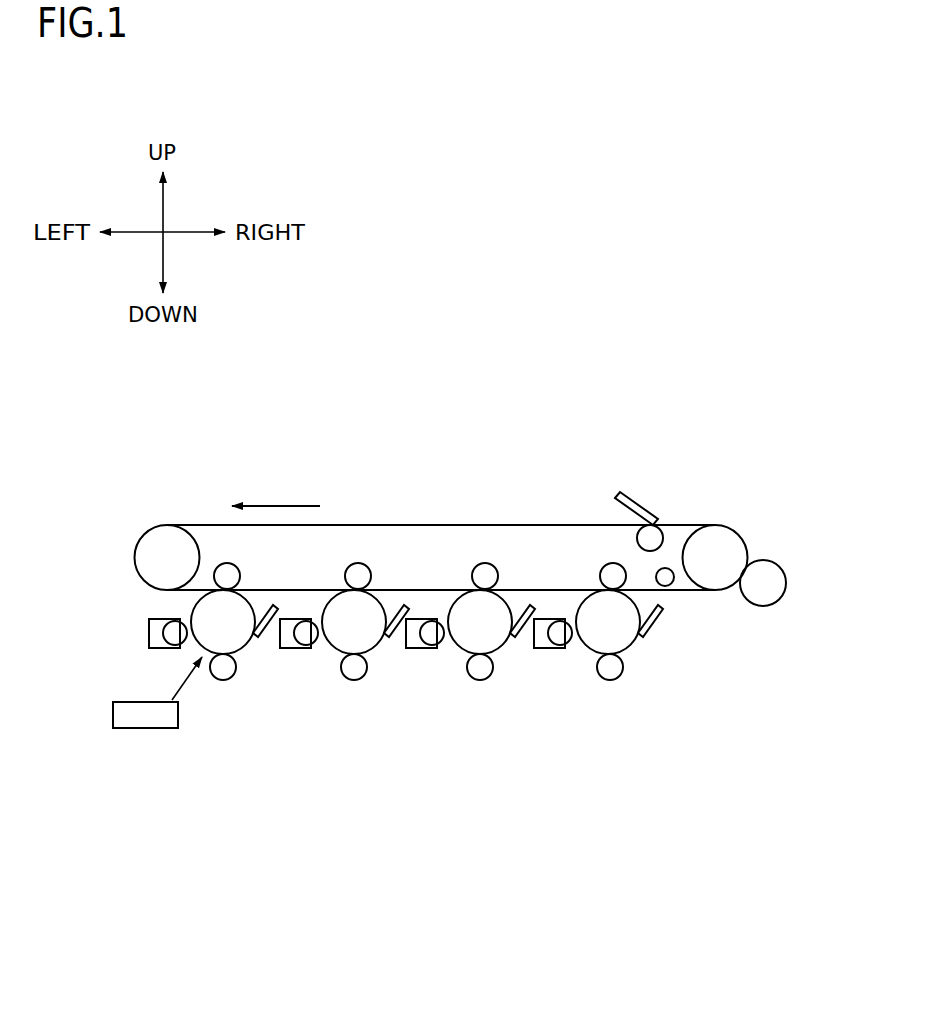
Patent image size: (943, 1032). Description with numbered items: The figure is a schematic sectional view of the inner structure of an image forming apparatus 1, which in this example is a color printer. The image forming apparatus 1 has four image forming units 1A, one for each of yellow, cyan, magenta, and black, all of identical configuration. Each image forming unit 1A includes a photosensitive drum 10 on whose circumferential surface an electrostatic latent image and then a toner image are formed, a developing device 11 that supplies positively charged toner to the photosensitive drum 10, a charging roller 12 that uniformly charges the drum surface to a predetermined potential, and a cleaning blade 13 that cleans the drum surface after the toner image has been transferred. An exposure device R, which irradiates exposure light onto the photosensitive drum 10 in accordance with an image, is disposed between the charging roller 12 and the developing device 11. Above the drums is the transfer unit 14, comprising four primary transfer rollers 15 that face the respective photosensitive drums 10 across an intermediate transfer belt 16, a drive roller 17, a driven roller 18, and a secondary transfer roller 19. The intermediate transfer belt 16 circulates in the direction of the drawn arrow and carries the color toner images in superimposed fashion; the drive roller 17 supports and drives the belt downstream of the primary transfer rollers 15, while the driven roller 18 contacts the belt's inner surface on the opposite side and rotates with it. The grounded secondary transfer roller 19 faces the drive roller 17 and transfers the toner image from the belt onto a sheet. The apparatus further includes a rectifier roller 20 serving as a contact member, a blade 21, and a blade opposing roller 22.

The image forming apparatus 1 is at (725, 458).
The image forming unit 1A is at (223, 713).
The photosensitive drum 10 is at (205, 610).
The developing device 11 is at (149, 628).
The charging roller 12 is at (231, 678).
The cleaning blade 13 is at (263, 634).
The transfer unit 14 is at (132, 478).
The primary transfer roller 15 is at (229, 570).
The intermediate transfer belt 16 is at (442, 525).
The drive roller 17 is at (735, 548).
The driven roller 18 is at (153, 558).
The secondary transfer roller 19 is at (770, 582).
The rectifier roller 20 is at (667, 578).
The blade 21 is at (625, 497).
The blade opposing roller 22 is at (652, 540).
The exposure device R is at (145, 728).